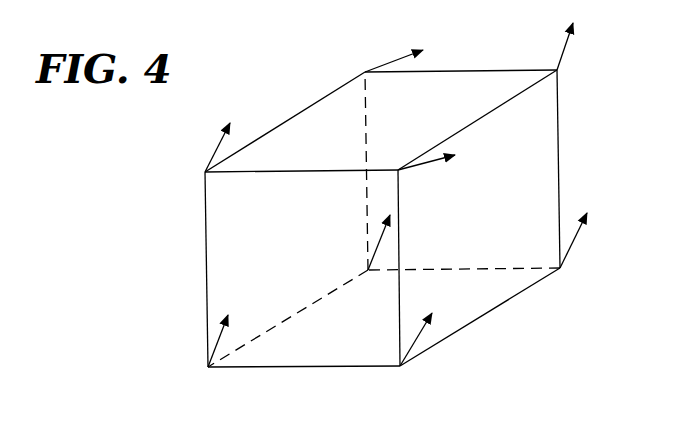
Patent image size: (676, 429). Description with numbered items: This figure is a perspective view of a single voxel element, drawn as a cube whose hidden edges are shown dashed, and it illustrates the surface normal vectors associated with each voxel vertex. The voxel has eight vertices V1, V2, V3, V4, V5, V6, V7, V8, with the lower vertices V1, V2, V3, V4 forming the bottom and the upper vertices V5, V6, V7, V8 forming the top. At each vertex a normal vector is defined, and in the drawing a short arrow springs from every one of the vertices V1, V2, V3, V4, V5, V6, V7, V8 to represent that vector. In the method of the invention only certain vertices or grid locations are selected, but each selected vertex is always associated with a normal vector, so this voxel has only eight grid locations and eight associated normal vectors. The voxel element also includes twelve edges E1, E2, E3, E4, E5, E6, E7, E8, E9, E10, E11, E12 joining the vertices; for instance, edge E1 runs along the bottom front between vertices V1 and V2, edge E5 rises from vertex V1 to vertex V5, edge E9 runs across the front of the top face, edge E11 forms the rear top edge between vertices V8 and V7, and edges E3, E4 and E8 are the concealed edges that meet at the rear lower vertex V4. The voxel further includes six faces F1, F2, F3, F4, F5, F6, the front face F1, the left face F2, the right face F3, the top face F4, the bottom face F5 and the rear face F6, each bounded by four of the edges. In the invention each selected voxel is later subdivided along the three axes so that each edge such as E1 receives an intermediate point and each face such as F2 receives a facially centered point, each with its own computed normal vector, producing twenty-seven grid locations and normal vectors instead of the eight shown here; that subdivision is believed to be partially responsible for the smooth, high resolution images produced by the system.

The voxel vertex V1 is at (210, 357).
The voxel vertex V2 is at (414, 356).
The voxel vertex V3 is at (578, 250).
The voxel vertex V4 is at (375, 256).
The voxel vertex V5 is at (201, 153).
The voxel vertex V6 is at (420, 156).
The voxel vertex V7 is at (577, 53).
The voxel vertex V8 is at (387, 58).
The voxel edge E1 is at (304, 382).
The voxel edge E2 is at (480, 317).
The voxel edge E3 is at (464, 257).
The voxel edge E4 is at (288, 318).
The voxel edge E5 is at (189, 269).
The voxel edge E6 is at (416, 268).
The voxel edge E7 is at (577, 169).
The voxel edge E8 is at (352, 171).
The voxel edge E9 is at (301, 184).
The voxel edge E10 is at (477, 120).
The voxel edge E11 is at (461, 59).
The voxel edge E12 is at (285, 122).
The voxel face F1 is at (302, 268).
The voxel face F2 is at (286, 219).
The voxel face F3 is at (479, 218).
The voxel face F4 is at (381, 130).
The voxel face F5 is at (384, 289).
The voxel face F6 is at (462, 170).